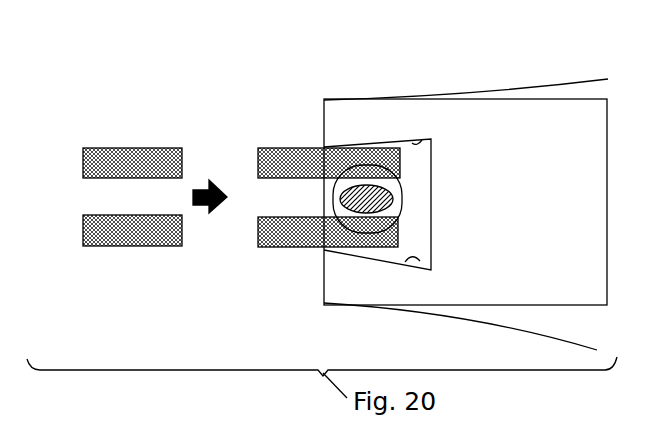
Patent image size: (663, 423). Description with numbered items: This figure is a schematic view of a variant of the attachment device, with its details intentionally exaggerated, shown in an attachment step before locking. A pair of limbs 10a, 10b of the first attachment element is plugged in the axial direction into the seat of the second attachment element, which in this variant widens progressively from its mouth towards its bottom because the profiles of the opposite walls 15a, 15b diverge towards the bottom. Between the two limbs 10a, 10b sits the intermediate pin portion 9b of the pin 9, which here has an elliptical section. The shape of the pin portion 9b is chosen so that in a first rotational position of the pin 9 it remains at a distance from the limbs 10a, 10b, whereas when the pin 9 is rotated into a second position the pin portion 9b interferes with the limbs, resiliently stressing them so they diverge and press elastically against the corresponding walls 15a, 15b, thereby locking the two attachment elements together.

The pin 9 is at (407, 189).
The pin portion 9b is at (333, 198).
The limb 10a is at (157, 148).
The limb 10b is at (157, 248).
The wall 15a is at (425, 131).
The wall 15b is at (418, 262).